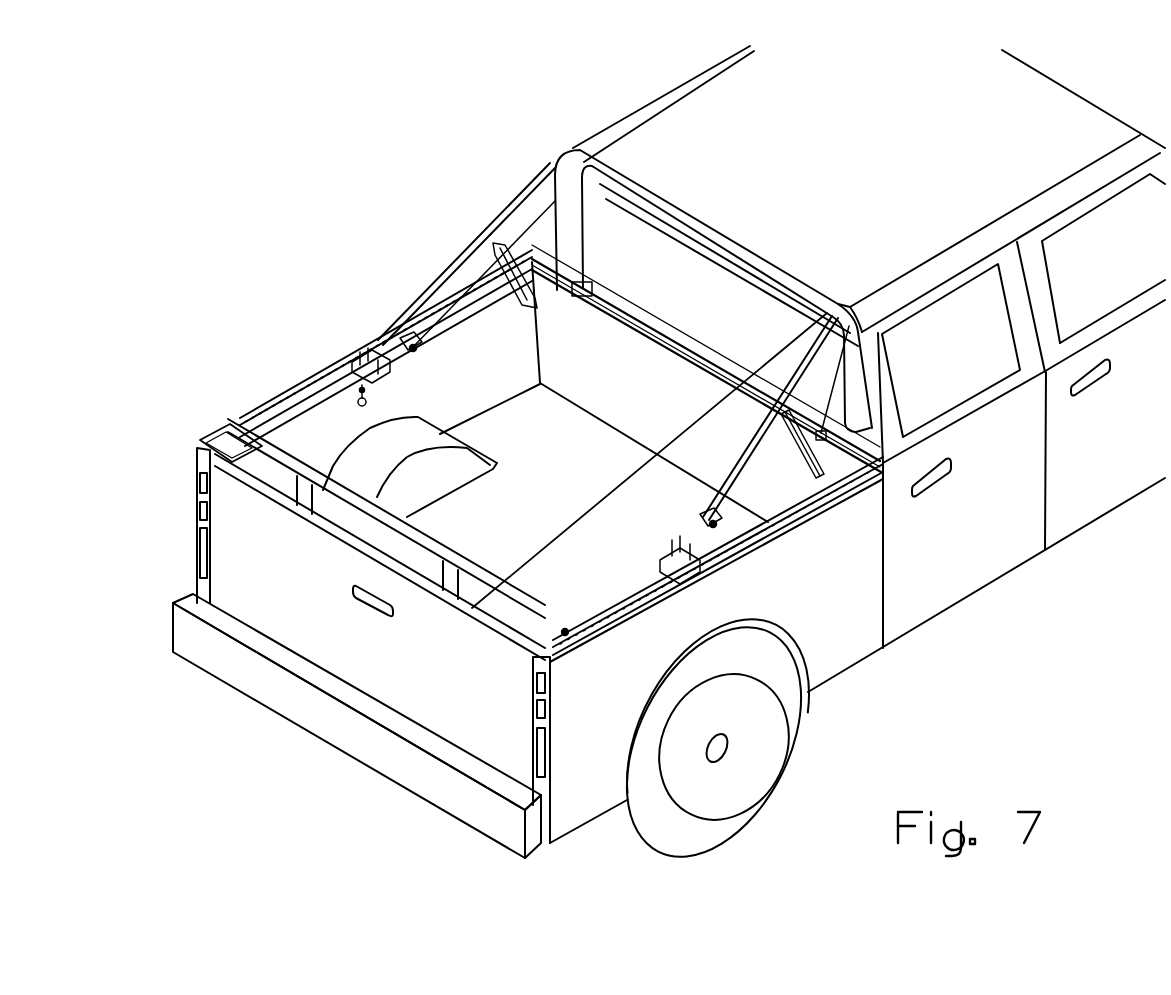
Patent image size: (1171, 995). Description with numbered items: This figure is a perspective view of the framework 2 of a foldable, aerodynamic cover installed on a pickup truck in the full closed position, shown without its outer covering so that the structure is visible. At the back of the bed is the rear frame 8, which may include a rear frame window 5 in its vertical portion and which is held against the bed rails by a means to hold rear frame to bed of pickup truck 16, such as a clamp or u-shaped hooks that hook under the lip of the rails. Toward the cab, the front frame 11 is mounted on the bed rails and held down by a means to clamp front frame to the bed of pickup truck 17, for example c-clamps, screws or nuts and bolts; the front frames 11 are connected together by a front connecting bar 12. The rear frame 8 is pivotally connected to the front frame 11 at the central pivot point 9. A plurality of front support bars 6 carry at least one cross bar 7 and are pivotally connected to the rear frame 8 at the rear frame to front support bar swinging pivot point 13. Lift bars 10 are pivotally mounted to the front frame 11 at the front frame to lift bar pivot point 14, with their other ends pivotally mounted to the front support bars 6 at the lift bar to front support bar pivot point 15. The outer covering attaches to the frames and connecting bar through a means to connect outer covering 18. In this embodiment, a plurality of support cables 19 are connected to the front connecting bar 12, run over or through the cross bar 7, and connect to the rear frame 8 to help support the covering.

The framework 2 is at (200, 410).
The rear frame window 5 is at (350, 510).
The front support bars 6 is at (520, 203).
The cross bar 7 is at (625, 187).
The rear frame 8 is at (302, 390).
The central pivot point 9 is at (376, 378).
The lift bars 10 is at (537, 307).
The front frame 11 is at (452, 323).
The front connecting bar 12 is at (718, 358).
The rear frame to front support bar swinging pivot point 13 is at (412, 352).
The front frame to lift bar pivot point 14 is at (540, 286).
The lift bar to front support bar pivot point 15 is at (505, 320).
The means to hold rear frame to bed of pickup truck 16 is at (250, 470).
The means to clamp front frame to the bed of pickup truck 17 is at (362, 408).
The means to connect outer covering 18 is at (647, 606).
The support cables 19 is at (390, 327).